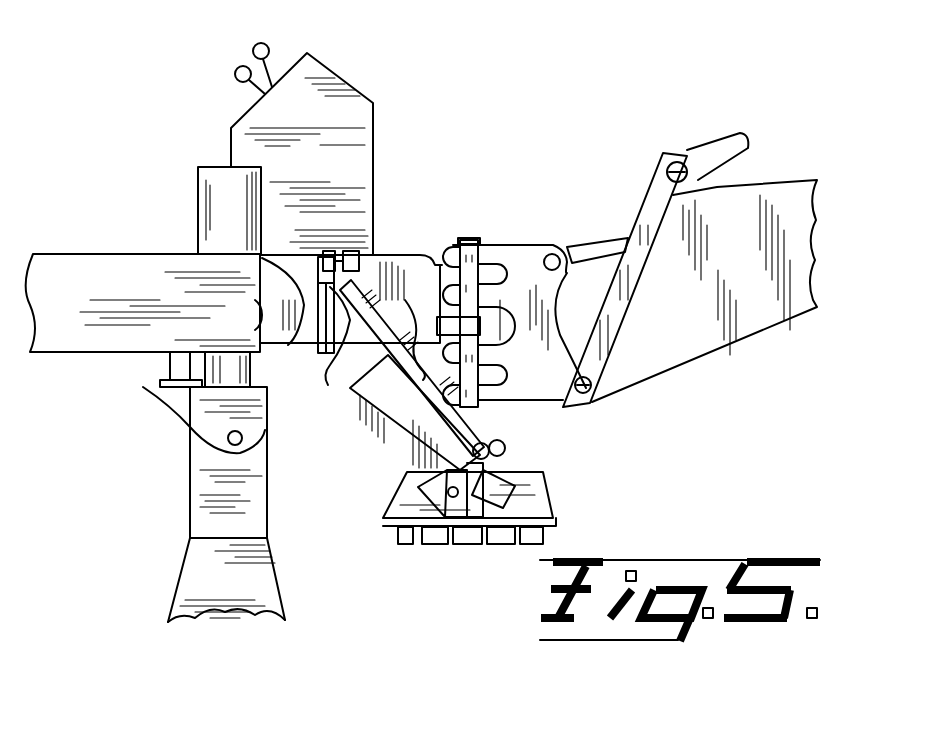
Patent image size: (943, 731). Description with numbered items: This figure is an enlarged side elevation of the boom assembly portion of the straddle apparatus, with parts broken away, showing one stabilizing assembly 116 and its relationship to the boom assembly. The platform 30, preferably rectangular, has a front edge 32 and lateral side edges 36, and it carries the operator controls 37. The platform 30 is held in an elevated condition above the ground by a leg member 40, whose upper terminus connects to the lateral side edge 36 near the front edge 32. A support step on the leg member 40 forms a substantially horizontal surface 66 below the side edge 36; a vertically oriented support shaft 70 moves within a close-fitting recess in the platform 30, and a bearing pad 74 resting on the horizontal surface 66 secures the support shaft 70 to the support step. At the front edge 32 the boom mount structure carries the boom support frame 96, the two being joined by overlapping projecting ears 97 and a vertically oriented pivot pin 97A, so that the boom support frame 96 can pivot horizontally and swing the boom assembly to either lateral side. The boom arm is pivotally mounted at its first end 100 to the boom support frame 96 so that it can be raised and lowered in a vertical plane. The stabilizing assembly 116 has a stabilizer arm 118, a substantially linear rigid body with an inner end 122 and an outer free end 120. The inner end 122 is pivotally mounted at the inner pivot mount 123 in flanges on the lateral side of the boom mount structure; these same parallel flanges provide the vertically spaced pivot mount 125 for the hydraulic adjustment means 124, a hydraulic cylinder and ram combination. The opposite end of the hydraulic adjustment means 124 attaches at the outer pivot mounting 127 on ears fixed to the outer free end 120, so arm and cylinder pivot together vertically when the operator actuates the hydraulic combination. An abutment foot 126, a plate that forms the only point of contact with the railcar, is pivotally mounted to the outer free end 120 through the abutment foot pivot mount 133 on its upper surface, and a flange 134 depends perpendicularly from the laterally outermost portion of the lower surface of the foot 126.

The platform 30 is at (63, 252).
The front edge 32 is at (168, 327).
The lateral side edge 36 is at (102, 316).
The operator controls 37 is at (288, 63).
The leg member 40 is at (200, 492).
The horizontal surface 66 is at (150, 387).
The support shaft 70 is at (170, 362).
The bearing pad 74 is at (178, 400).
The boom support frame 96 is at (527, 250).
The projecting ears 97 is at (500, 393).
The pivot pin 97A is at (472, 240).
The first end 100 is at (573, 405).
The stabilizing assembly 116 is at (355, 412).
The stabilizer arm 118 is at (415, 432).
The outer free end 120 is at (540, 478).
The inner end 122 is at (313, 352).
The inner pivot mount 123 is at (315, 298).
The hydraulic adjustment means 124 is at (355, 378).
The pivot mount 125 is at (323, 261).
The abutment foot 126 is at (545, 502).
The outer pivot mounting 127 is at (500, 448).
The abutment foot pivot mount 133 is at (415, 487).
The flange 134 is at (395, 538).